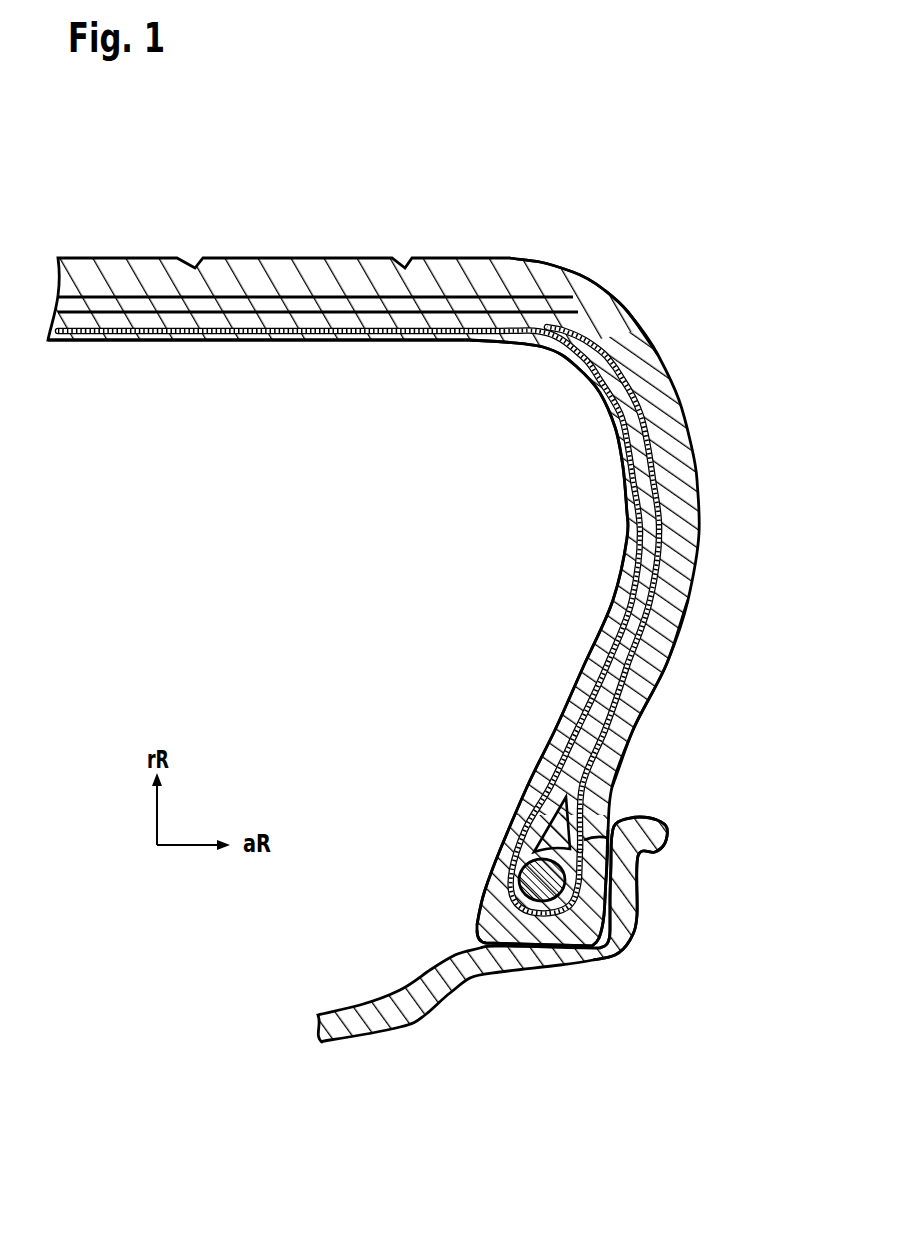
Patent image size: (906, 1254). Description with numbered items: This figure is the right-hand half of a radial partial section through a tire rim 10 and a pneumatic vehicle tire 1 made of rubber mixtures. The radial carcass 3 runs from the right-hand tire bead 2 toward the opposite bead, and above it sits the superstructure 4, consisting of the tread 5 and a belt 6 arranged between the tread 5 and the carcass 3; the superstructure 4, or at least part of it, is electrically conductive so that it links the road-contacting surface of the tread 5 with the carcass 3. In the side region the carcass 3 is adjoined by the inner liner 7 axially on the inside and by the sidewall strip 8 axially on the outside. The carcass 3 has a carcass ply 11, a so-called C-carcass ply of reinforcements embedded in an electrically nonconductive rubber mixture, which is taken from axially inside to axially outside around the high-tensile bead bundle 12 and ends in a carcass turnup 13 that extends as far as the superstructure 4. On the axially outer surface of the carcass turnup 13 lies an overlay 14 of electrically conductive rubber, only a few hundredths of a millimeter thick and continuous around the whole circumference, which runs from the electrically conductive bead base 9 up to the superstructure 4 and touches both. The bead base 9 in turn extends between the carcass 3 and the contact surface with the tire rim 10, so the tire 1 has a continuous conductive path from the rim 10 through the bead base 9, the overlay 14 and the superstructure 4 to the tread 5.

The pneumatic vehicle tire 1 is at (288, 200).
The tire bead 2 is at (446, 884).
The carcass 3 is at (314, 352).
The superstructure 4 is at (648, 246).
The tread 5 is at (348, 262).
The belt 6 is at (468, 290).
The inner liner 7 is at (636, 538).
The sidewall strip 8 is at (690, 566).
The electrically conductive bead base 9 is at (577, 920).
The tire rim 10 is at (625, 910).
The carcass ply 11 is at (632, 460).
The bead bundle 12 is at (505, 852).
The carcass turnup 13 is at (602, 352).
The overlay 14 is at (668, 665).